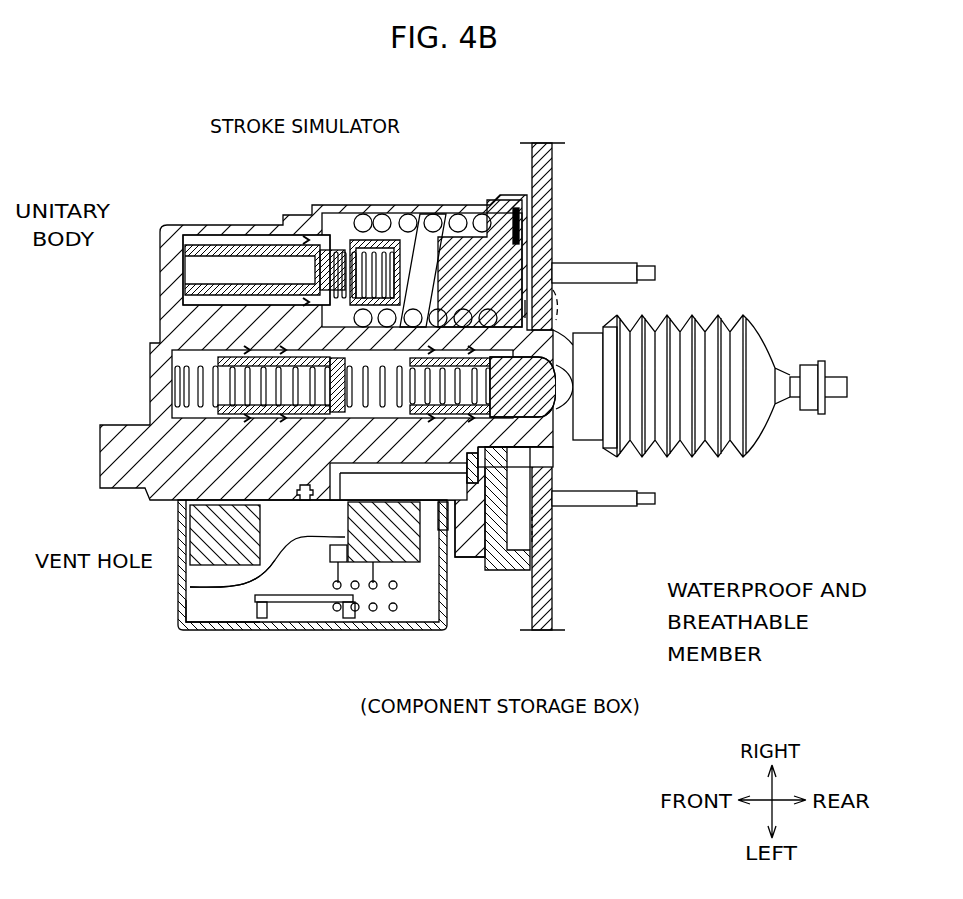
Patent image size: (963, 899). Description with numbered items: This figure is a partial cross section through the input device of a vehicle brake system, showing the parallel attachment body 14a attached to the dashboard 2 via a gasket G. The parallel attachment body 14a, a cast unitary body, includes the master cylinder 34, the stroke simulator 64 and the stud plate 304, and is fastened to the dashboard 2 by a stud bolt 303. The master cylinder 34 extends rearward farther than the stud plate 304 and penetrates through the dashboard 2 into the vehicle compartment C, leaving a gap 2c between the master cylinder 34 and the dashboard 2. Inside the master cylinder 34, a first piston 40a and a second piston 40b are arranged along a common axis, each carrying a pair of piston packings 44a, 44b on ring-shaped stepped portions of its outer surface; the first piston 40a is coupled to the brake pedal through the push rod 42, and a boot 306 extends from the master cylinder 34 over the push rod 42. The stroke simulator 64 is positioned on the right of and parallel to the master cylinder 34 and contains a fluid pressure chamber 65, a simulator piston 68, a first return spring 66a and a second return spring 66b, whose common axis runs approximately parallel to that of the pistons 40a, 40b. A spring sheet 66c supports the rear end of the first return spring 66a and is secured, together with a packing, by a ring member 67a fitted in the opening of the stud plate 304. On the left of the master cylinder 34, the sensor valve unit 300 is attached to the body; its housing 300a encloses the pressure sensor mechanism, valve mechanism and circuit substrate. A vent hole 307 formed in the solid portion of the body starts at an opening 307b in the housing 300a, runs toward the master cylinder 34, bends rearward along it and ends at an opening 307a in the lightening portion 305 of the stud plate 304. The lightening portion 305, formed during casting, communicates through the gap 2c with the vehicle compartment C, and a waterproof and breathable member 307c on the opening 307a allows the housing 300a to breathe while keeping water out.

The parallel attachment body 14a is at (130, 298).
The dashboard 2 is at (548, 210).
The gasket G is at (560, 270).
The vehicle compartment C is at (729, 226).
The stroke simulator 64 is at (272, 224).
The fluid pressure chamber 65 is at (192, 268).
The simulator piston 68 is at (220, 246).
The first return spring 66a is at (435, 220).
The second return spring 66b is at (383, 250).
The spring sheet 66c is at (482, 250).
The ring member 67a is at (522, 228).
The second piston 40b is at (250, 352).
The piston packing 44a is at (335, 360).
The piston packing 44b is at (335, 413).
The first piston 40a is at (530, 420).
The gap 2c is at (540, 470).
The vent hole 307 is at (298, 487).
The sensor valve unit 300 is at (345, 632).
The housing 300a is at (245, 640).
The opening 307b is at (195, 588).
The opening 307a is at (473, 540).
The lightening portion 305 is at (520, 555).
The stud plate 304 is at (545, 603).
The waterproof and breathable member 307c is at (602, 512).
The stud bolt 303 is at (655, 272).
The master cylinder 34 is at (566, 326).
The boot 306 is at (710, 457).
The push rod 42 is at (790, 375).